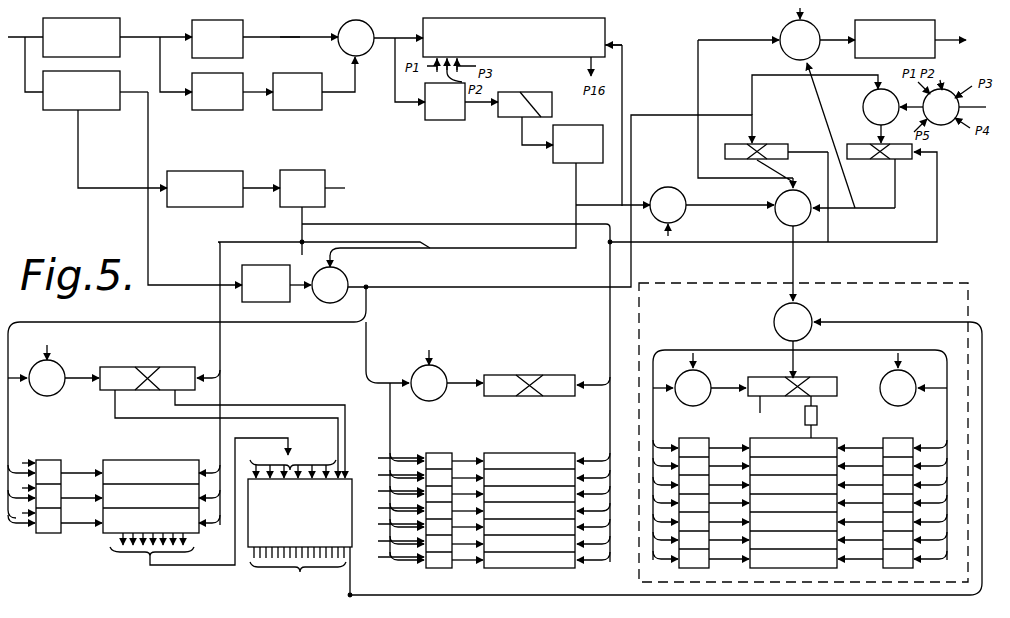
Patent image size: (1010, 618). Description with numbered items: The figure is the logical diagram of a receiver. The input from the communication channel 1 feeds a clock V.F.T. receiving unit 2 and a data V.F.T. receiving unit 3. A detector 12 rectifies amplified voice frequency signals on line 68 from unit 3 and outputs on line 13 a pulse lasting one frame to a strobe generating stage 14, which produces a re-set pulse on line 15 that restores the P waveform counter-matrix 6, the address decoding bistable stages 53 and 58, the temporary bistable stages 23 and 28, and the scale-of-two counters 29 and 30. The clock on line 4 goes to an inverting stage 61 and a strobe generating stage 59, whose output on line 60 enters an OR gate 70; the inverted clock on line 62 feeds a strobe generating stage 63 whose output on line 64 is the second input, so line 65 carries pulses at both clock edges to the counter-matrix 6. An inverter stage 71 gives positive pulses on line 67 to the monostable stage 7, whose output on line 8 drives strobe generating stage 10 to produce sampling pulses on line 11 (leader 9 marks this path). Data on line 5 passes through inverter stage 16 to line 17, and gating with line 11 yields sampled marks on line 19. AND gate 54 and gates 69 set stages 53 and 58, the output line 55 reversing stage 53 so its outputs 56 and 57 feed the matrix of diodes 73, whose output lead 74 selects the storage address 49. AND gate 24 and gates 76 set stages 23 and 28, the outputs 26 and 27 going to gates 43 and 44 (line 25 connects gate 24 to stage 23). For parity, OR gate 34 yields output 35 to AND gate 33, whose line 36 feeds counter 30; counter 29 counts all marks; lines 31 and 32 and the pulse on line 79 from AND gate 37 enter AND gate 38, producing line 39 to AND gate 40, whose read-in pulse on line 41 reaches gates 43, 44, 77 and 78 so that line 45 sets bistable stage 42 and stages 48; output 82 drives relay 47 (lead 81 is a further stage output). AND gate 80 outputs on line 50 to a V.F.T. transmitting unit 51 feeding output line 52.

The communication channel 1 is at (25, 51).
The clock V.F.T. receiving unit 2 is at (122, 37).
The data V.F.T. receiving unit 3 is at (121, 90).
The clock output line 4 is at (174, 53).
The data output line 5 is at (148, 140).
The P waveform counter-matrix 6 is at (605, 40).
The monostable stage 7 is at (536, 92).
The monostable output line 8 is at (521, 140).
The line 9 is at (530, 118).
The strobe generating stage 10 is at (553, 160).
The sampling pulse line 11 is at (333, 252).
The detector 12 is at (205, 207).
The detector output line 13 is at (254, 185).
The strobe generating stage 14 is at (319, 188).
The re-set line 15 is at (622, 62).
The inverter stage 16 is at (262, 264).
The inverter output line 17 is at (298, 290).
The sampled mark line 19 is at (370, 285).
The temporary data decoding bistable stage 23 is at (528, 375).
The AND gate 24 is at (431, 397).
The line 25 is at (463, 378).
The bistable output line 26 is at (560, 412).
The bistable output line 27 is at (497, 412).
The temporary data decoding bistable stages 28 is at (532, 568).
The scale-of-two counter stage 29 is at (737, 144).
The scale-of-two counter stage 30 is at (870, 158).
The counter output line 31 is at (762, 38).
The counter output line 32 is at (826, 98).
The AND gate 33 is at (863, 108).
The OR gate 34 is at (965, 107).
The OR gate output 35 is at (918, 114).
The AND gate output line 36 is at (868, 131).
The AND gate 37 is at (662, 188).
The AND gate 38 is at (782, 222).
The compatibility output line 39 is at (796, 274).
The AND gate 40 is at (777, 314).
The read-in pulse output line 41 is at (806, 347).
The bistable stage 42 is at (792, 376).
The AND gate 43 is at (688, 403).
The AND gate 44 is at (903, 403).
The set pulse line 45 is at (732, 397).
The relay 47 is at (818, 418).
The bistable stages 48 is at (835, 566).
The final storage address 49 is at (639, 578).
The AND gate output line 50 is at (826, 38).
The V.F.T. transmitting unit 51 is at (856, 60).
The output line 52 is at (950, 29).
The address decoding bistable stage 53 is at (146, 367).
The AND gate 54 is at (50, 396).
The AND gate output line 55 is at (78, 372).
The bistable output line 56 is at (226, 434).
The bistable output line 57 is at (245, 434).
The address decoding bistable stages 58 is at (110, 542).
The strobe generating stage 59 is at (246, 37).
The strobe output line 60 is at (294, 38).
The inverting stage 61 is at (213, 110).
The inverting stage output line 62 is at (256, 94).
The strobe generating stage 63 is at (298, 110).
The strobe output line 64 is at (355, 94).
The OR gate output line 65 is at (399, 58).
The inverter output line 67 is at (482, 105).
The detector input line 68 is at (106, 188).
The AND gates 69 is at (48, 534).
The OR gate 70 is at (351, 54).
The inverter stage 71 is at (456, 120).
The matrix of diodes 73 is at (300, 532).
The matrix output lead 74 is at (665, 445).
The AND gates 76 is at (433, 570).
The AND gates 77 is at (702, 567).
The AND gates 78 is at (920, 574).
The AND gate output line 79 is at (730, 217).
The AND gate 80 is at (789, 55).
The line 81 is at (761, 416).
The bistable stage output 82 is at (818, 406).